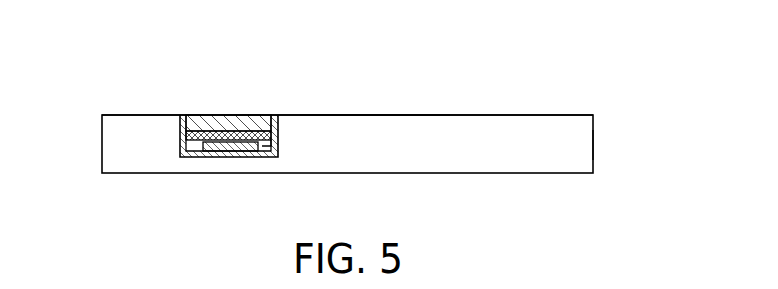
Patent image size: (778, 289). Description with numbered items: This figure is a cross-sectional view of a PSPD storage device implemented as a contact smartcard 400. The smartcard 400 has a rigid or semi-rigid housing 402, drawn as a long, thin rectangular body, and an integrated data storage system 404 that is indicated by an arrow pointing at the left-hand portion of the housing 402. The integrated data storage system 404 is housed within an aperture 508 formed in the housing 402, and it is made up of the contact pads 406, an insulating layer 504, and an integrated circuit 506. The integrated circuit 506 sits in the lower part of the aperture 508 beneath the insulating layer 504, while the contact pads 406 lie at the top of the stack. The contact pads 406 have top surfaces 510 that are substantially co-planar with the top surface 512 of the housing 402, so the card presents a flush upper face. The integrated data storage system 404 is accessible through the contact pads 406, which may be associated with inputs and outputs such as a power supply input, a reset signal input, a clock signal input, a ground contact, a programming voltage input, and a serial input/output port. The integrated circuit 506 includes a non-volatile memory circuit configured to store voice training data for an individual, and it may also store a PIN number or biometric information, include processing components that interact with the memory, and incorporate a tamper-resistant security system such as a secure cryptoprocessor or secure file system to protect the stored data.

The contact smartcard 400 is at (513, 115).
The housing 402 is at (592, 150).
The integrated data storage system 404 is at (150, 78).
The contact pads 406 is at (247, 115).
The insulating layer 504 is at (264, 140).
The integrated circuit 506 is at (232, 151).
The aperture 508 is at (190, 152).
The top surfaces 510 is at (207, 115).
The top surface 512 is at (375, 115).